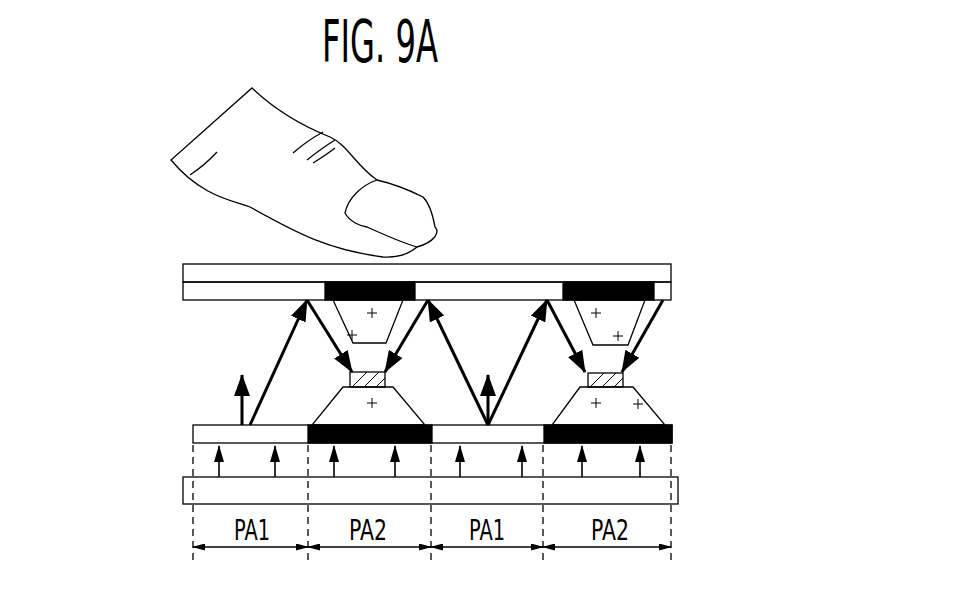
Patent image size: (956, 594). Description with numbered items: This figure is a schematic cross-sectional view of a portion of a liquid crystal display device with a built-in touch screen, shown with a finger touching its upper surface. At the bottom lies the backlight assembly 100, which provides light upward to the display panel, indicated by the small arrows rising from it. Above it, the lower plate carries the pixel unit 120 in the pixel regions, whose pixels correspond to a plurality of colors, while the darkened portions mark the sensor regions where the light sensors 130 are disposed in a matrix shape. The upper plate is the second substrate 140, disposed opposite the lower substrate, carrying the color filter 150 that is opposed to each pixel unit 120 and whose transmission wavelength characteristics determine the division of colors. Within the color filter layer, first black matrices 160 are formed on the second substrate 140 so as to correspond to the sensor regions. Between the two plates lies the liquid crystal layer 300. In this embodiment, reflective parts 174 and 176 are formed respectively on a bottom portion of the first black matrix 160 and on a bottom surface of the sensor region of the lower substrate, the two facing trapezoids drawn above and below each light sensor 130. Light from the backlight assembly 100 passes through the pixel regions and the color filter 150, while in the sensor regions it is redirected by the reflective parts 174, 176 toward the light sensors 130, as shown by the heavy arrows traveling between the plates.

The backlight assembly 100 is at (187, 490).
The pixel unit 120 is at (213, 434).
The light sensor 130 is at (623, 378).
The second substrate 140 is at (218, 270).
The color filter 150 is at (195, 290).
The first black matrix 160 is at (602, 281).
The reflective part 174 is at (388, 316).
The reflective part 176 is at (337, 418).
The liquid crystal layer 300 is at (243, 363).